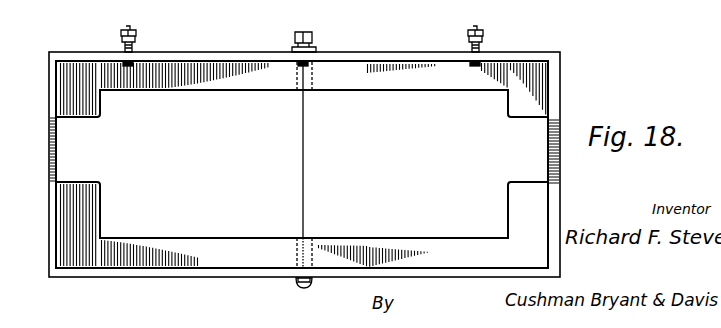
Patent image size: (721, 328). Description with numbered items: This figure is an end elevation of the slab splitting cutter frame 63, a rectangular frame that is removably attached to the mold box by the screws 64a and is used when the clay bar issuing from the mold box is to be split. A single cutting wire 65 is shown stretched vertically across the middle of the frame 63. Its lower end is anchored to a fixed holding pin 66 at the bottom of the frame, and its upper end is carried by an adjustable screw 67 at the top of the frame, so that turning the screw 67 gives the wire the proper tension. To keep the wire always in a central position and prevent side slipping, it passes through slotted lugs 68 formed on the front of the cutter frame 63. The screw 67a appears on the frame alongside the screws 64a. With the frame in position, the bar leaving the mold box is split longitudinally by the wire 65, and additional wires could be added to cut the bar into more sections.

The frame 63 is at (346, 62).
The screws 64a is at (468, 33).
The cutting wire 65 is at (306, 160).
The fixed holding pin 66 is at (299, 285).
The adjustable screw 67 is at (295, 34).
The screw 67a is at (121, 33).
The slotted lugs 68 is at (295, 92).